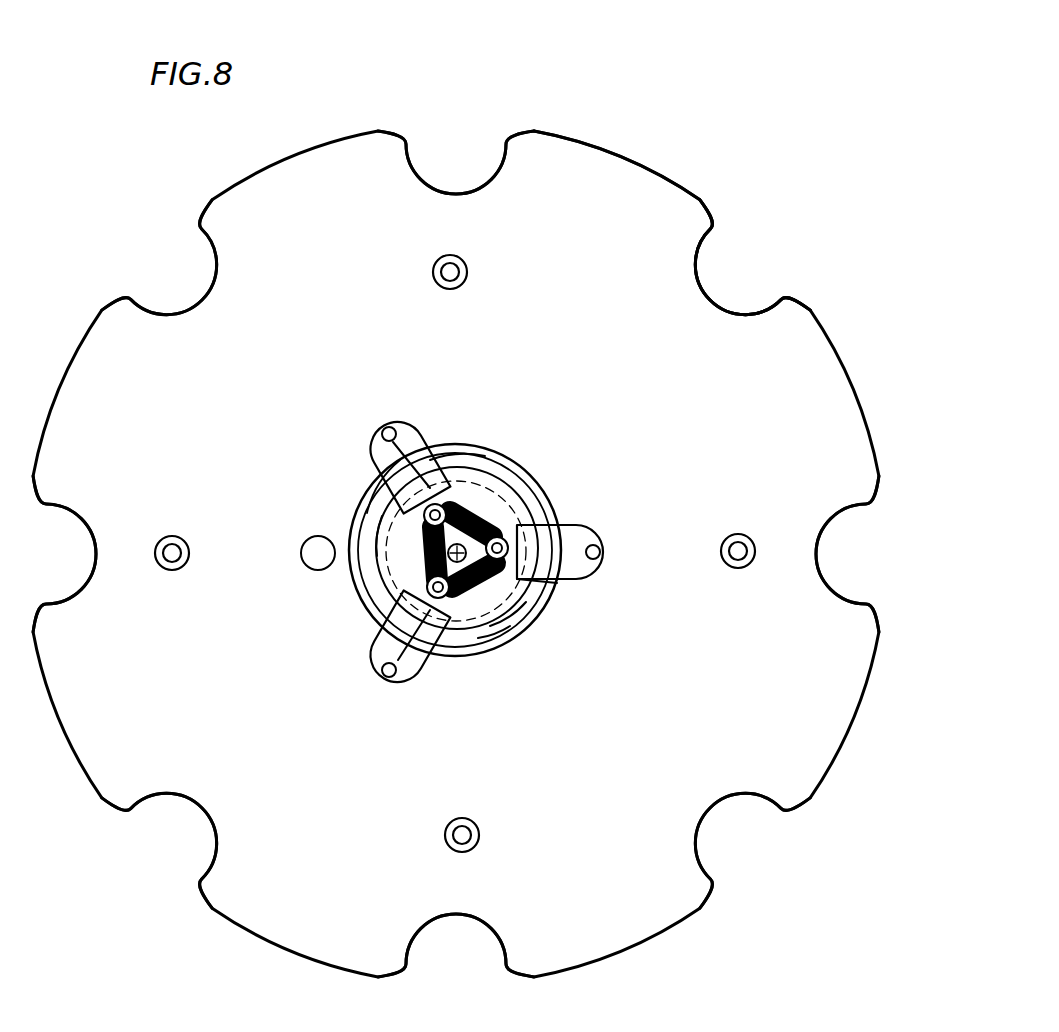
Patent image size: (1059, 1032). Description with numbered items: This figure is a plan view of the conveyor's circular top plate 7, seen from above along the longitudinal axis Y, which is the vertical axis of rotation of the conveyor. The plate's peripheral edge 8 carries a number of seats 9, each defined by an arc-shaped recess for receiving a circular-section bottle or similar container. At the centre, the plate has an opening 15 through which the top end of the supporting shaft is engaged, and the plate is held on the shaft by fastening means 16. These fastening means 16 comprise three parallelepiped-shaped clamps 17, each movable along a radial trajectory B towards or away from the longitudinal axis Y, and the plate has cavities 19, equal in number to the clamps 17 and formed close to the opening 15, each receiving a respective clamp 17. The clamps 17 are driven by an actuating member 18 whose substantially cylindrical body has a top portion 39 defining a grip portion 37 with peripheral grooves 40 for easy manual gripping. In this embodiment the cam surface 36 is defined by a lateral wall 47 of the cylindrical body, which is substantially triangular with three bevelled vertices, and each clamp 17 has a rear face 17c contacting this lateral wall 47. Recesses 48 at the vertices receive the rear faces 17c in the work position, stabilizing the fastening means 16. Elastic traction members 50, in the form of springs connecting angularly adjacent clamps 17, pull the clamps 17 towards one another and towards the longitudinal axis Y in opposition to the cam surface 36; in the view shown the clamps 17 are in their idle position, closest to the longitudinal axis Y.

The circular top plate 7 is at (622, 150).
The peripheral edge 8 is at (657, 168).
The seats 9 is at (454, 149).
The opening 15 is at (557, 590).
The fastening means 16 is at (572, 510).
The clamp 17 is at (445, 470).
The rear face 17c is at (425, 490).
The actuating member 18 is at (503, 640).
The cavities 19 is at (403, 430).
The cam surface 36 is at (378, 500).
The grip portion 37 is at (462, 447).
The top portion 39 is at (532, 608).
The peripheral grooves 40 is at (557, 583).
The lateral wall 47 is at (356, 508).
The recesses 48 is at (497, 465).
The elastic traction members 50 is at (395, 543).
The radial trajectory B is at (440, 505).
The longitudinal axis Y is at (492, 492).